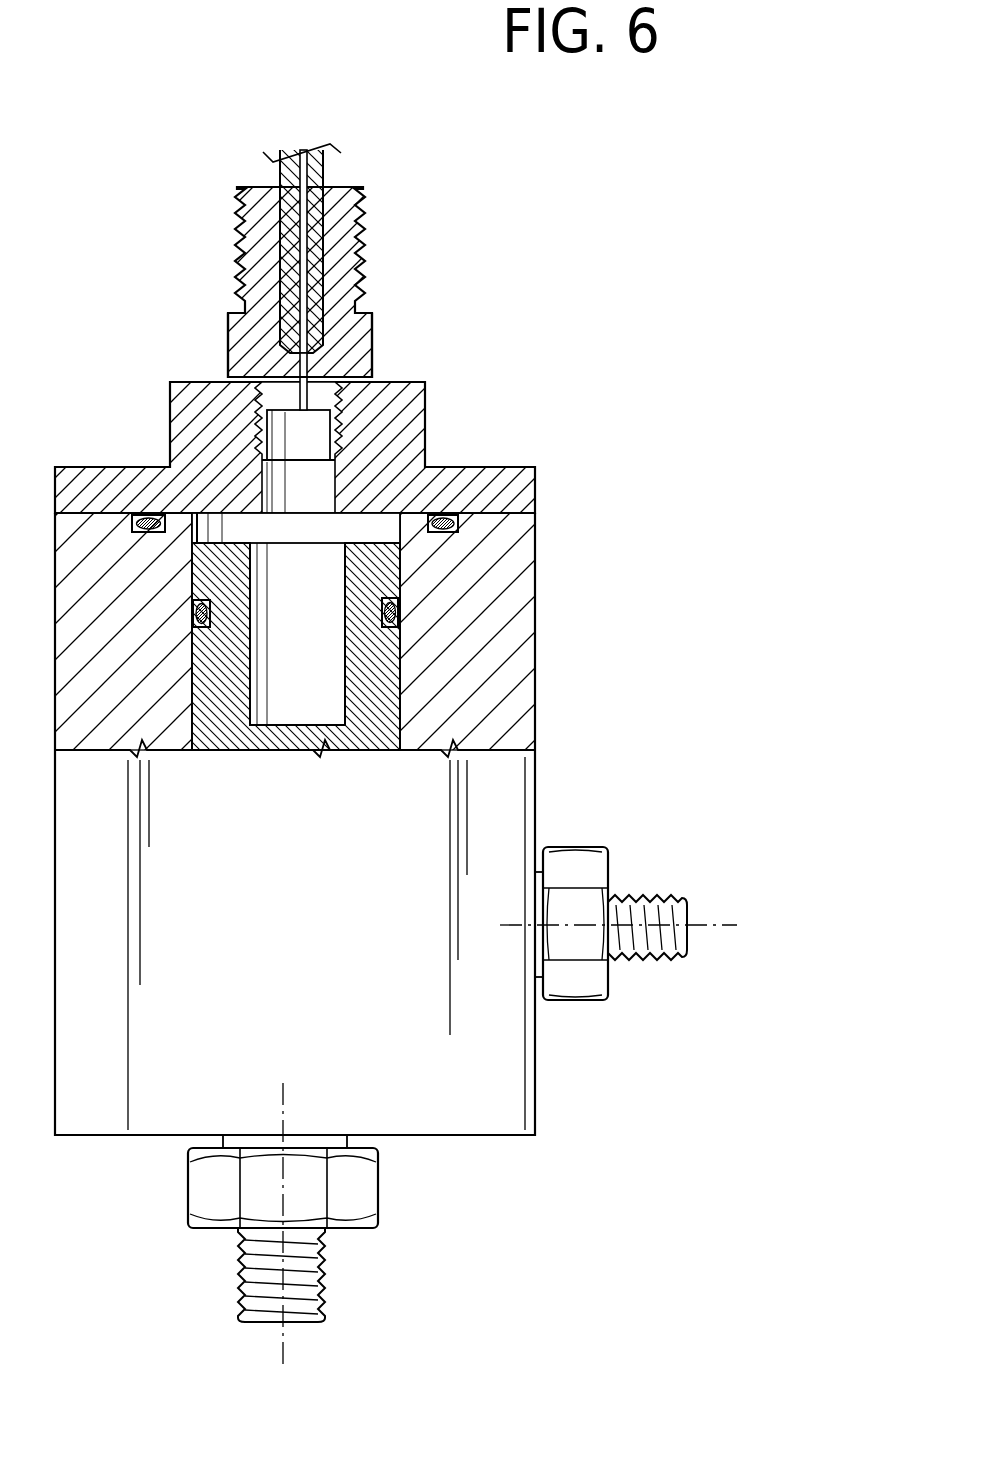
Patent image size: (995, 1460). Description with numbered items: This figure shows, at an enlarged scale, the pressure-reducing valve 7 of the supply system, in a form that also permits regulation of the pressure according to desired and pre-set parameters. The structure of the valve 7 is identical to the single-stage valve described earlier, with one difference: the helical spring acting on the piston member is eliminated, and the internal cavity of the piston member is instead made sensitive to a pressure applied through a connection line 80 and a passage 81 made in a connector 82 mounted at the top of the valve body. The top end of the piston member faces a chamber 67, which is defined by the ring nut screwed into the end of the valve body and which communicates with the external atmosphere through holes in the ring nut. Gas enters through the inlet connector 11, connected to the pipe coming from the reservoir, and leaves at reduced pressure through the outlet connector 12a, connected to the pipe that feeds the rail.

The pressure-reducing valve 7 is at (700, 299).
The inlet connector 11 is at (317, 1290).
The outlet connector 12a is at (668, 891).
The chamber 67 is at (320, 596).
The connection line 80 is at (317, 254).
The passage 81 is at (312, 370).
The connector 82 is at (407, 428).